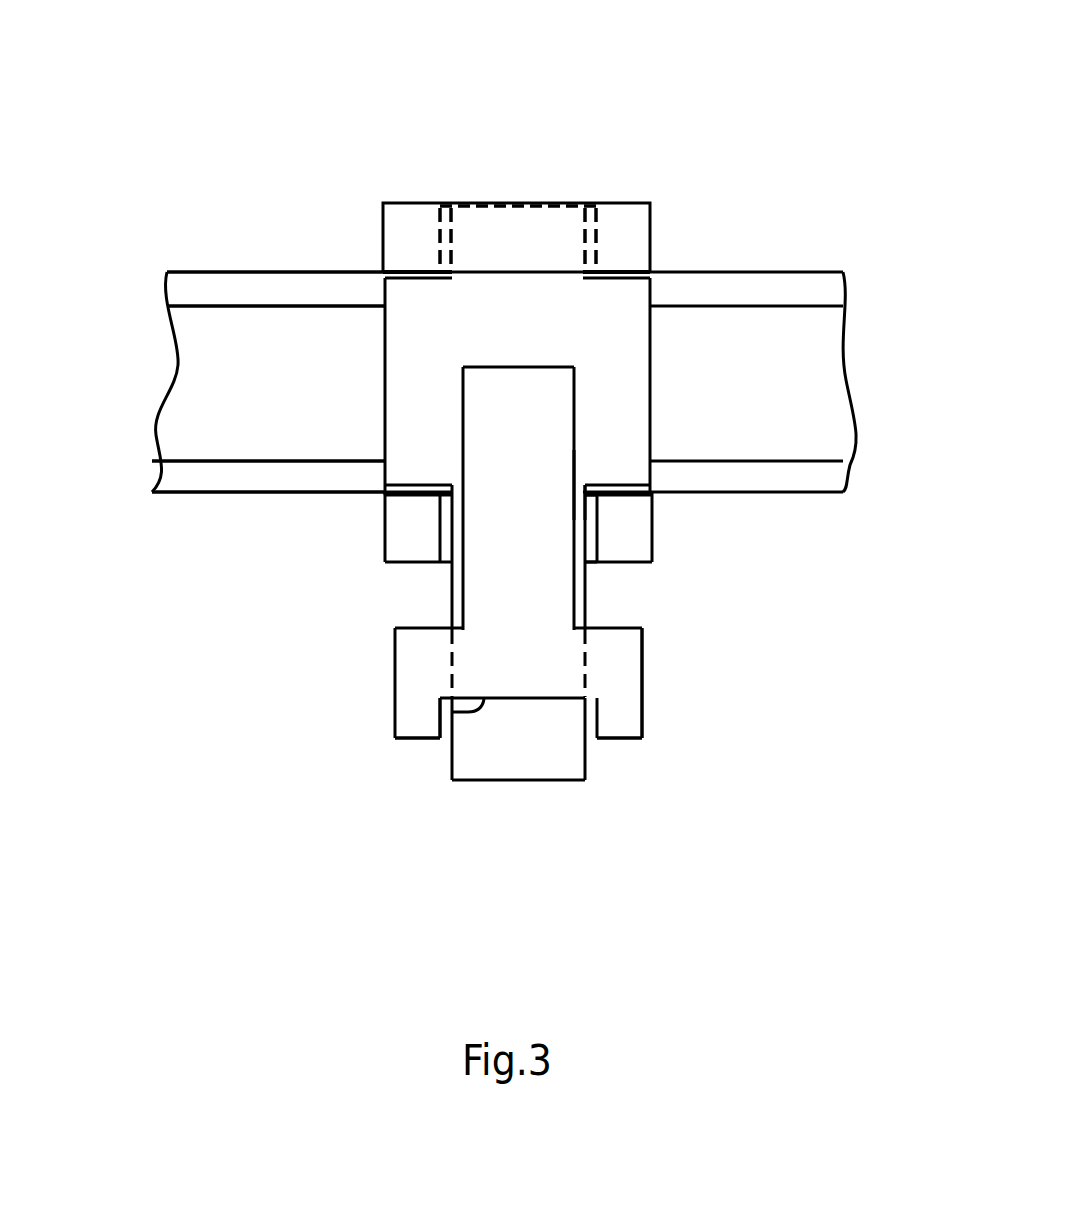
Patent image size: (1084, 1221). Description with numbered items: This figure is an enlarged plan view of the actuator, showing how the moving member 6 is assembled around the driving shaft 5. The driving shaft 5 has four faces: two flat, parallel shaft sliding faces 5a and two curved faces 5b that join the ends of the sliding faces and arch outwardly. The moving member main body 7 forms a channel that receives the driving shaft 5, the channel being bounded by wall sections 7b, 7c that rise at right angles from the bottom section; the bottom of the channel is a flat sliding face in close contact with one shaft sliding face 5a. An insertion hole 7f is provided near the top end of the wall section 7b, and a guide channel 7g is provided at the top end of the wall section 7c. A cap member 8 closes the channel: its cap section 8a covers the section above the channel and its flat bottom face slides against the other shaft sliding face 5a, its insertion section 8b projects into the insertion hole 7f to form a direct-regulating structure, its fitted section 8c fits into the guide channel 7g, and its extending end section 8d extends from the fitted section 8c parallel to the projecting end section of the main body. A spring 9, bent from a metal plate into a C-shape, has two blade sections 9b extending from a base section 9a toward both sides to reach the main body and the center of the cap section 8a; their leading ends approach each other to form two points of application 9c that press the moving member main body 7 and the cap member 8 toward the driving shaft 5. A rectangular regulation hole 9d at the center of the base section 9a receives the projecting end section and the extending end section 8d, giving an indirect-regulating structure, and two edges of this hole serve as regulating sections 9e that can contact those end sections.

The driving shaft 5 is at (193, 260).
The shaft sliding face 5a is at (225, 385).
The curved face 5b is at (267, 271).
The moving member 6 is at (519, 195).
The moving member main body 7 is at (522, 337).
The wall section 7b is at (653, 206).
The wall section 7c is at (610, 564).
The insertion hole 7f is at (583, 198).
The guide channel 7g is at (438, 549).
The cap member 8 is at (437, 594).
The cap section 8a is at (403, 363).
The insertion section 8b is at (468, 195).
The fitted section 8c is at (588, 533).
The extending end section 8d is at (588, 750).
The spring 9 is at (380, 667).
The base section 9a is at (645, 695).
The blade section 9b is at (580, 470).
The point of application 9c is at (540, 367).
The regulation hole 9d is at (445, 723).
The regulating section 9e is at (453, 712).